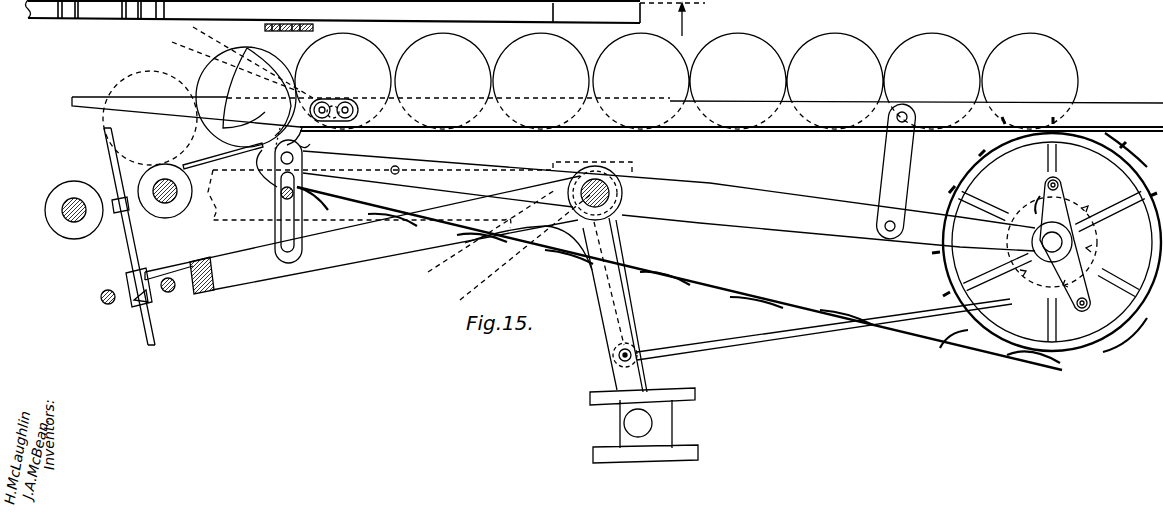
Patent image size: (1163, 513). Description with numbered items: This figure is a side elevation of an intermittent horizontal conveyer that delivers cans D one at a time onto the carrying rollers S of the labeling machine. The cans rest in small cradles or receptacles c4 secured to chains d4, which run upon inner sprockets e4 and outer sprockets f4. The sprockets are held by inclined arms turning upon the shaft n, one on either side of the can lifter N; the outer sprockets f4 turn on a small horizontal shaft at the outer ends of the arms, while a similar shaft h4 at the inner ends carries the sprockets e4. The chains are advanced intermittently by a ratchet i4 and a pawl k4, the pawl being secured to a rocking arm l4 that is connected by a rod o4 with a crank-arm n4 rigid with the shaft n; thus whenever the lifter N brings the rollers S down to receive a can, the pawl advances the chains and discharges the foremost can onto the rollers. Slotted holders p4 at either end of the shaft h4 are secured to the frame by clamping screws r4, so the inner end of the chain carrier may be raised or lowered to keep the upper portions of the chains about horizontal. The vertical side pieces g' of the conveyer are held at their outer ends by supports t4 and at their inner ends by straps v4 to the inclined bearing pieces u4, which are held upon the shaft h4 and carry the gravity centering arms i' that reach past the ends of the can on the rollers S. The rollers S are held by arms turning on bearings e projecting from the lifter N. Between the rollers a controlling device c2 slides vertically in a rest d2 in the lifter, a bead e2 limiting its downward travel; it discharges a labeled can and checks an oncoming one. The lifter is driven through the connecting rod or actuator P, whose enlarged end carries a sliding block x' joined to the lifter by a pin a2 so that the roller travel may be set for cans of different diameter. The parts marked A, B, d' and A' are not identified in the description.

The main beam A is at (366, 18).
The clamping screw r4 is at (291, 32).
The can D is at (590, 99).
The inclined bearing piece or holder u4 is at (247, 66).
The gravity centering arm i' is at (617, 112).
The bed plate B is at (782, 133).
The side piece of the conveyer g' is at (947, 187).
The strap v4 is at (338, 101).
The shaft for the inner sprockets h4 is at (292, 136).
The arm d' is at (223, 155).
The sprocket e4 is at (258, 171).
The slotted holder p4 is at (278, 230).
The frame outline A' is at (420, 231).
The can lifter N is at (362, 235).
The controlling device c2 is at (118, 251).
The bead e2 is at (126, 208).
The rest or bearing d2 is at (137, 302).
The carrying roller S is at (118, 201).
The bearing e is at (108, 304).
The shaft n is at (612, 198).
The crank-arm n4 is at (622, 232).
The connecting rod or actuator P is at (600, 392).
The rod o4 is at (833, 330).
The pin a2 is at (638, 423).
The block x' is at (659, 407).
The chain d4 is at (814, 309).
The cradle or receptacle c4 is at (255, 148).
The support t4 is at (905, 166).
The sprocket f4 is at (1130, 174).
The pawl k4 is at (1044, 186).
The rocking arm l4 is at (1087, 290).
The ratchet i4 is at (1088, 240).